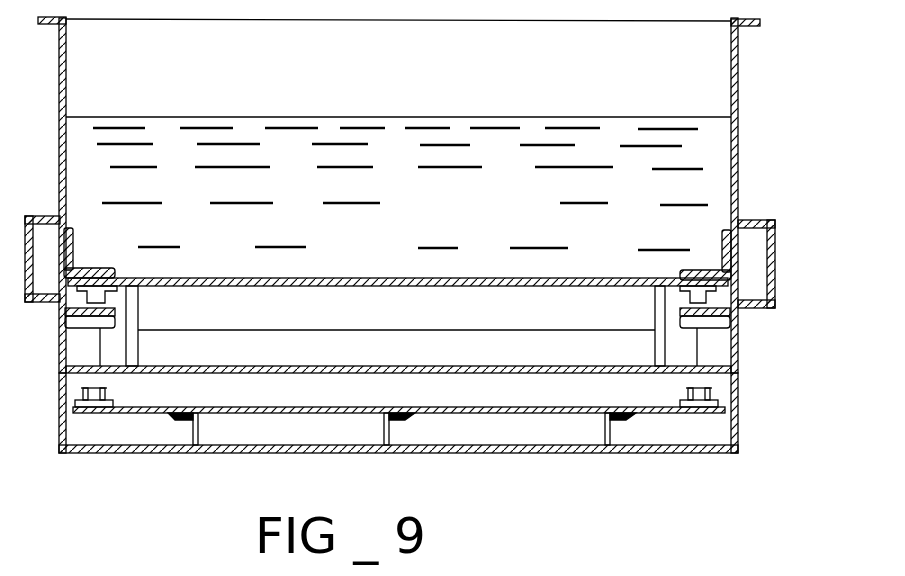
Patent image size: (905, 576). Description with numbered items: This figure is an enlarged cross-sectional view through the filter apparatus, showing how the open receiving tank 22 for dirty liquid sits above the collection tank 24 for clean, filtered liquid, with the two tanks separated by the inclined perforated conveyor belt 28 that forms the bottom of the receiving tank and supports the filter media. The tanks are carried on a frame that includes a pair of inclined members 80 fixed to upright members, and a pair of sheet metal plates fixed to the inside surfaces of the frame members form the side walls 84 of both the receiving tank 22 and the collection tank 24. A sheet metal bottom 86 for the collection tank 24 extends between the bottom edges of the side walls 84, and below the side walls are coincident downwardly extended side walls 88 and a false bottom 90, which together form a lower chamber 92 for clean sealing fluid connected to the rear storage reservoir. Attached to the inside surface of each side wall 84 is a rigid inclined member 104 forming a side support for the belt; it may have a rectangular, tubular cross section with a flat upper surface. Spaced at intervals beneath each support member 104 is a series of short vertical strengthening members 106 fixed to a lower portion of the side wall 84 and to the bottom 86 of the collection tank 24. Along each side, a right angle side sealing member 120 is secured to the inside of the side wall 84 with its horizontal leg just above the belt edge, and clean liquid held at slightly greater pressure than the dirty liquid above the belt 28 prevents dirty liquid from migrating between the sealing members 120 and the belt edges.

The receiving tank 22 is at (493, 203).
The collection tank 24 is at (405, 365).
The inclined perforated conveyor belt 28 is at (372, 278).
The inclined members 80 is at (773, 220).
The side walls 84 is at (739, 142).
The sheet metal bottom 86 is at (541, 365).
The downwardly extended side walls 88 is at (738, 438).
The false bottom 90 is at (560, 455).
The lower chamber 92 is at (300, 400).
The inclined member 104 is at (730, 340).
The vertical strengthening members 106 is at (695, 353).
The side sealing members 120 is at (727, 252).